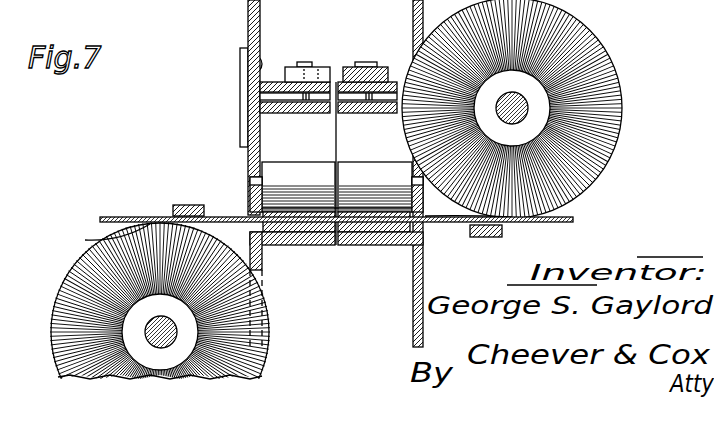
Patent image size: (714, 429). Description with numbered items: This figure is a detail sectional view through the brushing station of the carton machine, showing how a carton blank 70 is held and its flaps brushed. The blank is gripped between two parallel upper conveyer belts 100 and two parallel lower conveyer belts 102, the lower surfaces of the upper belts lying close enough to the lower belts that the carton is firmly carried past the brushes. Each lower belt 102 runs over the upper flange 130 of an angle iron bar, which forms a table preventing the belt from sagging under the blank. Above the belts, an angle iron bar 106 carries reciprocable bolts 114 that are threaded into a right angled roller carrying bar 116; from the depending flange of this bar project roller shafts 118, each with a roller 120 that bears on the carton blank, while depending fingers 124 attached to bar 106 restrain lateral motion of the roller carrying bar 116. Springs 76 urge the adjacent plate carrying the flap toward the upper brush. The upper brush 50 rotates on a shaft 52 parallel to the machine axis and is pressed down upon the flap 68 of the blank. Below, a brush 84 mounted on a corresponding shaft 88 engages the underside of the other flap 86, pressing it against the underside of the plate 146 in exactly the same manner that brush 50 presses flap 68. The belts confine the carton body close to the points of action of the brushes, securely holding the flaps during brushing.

The brush 50 is at (603, 82).
The shaft 52 is at (521, 97).
The flap 68 is at (530, 215).
The carton blank 70 is at (230, 217).
The springs 76 is at (565, 226).
The brush 84 is at (72, 283).
The flap 86 is at (96, 230).
The shaft 88 is at (179, 315).
The upper conveyer belts 100 is at (345, 208).
The lower conveyer belts 102 is at (292, 246).
The bar 106 is at (262, 43).
The bolts 114 is at (365, 62).
The roller carrying bar 116 is at (302, 113).
The roller shafts 118 is at (252, 179).
The roller 120 is at (360, 167).
The depending fingers 124 is at (240, 108).
The upper flange 130 is at (336, 246).
The plate 146 is at (125, 216).